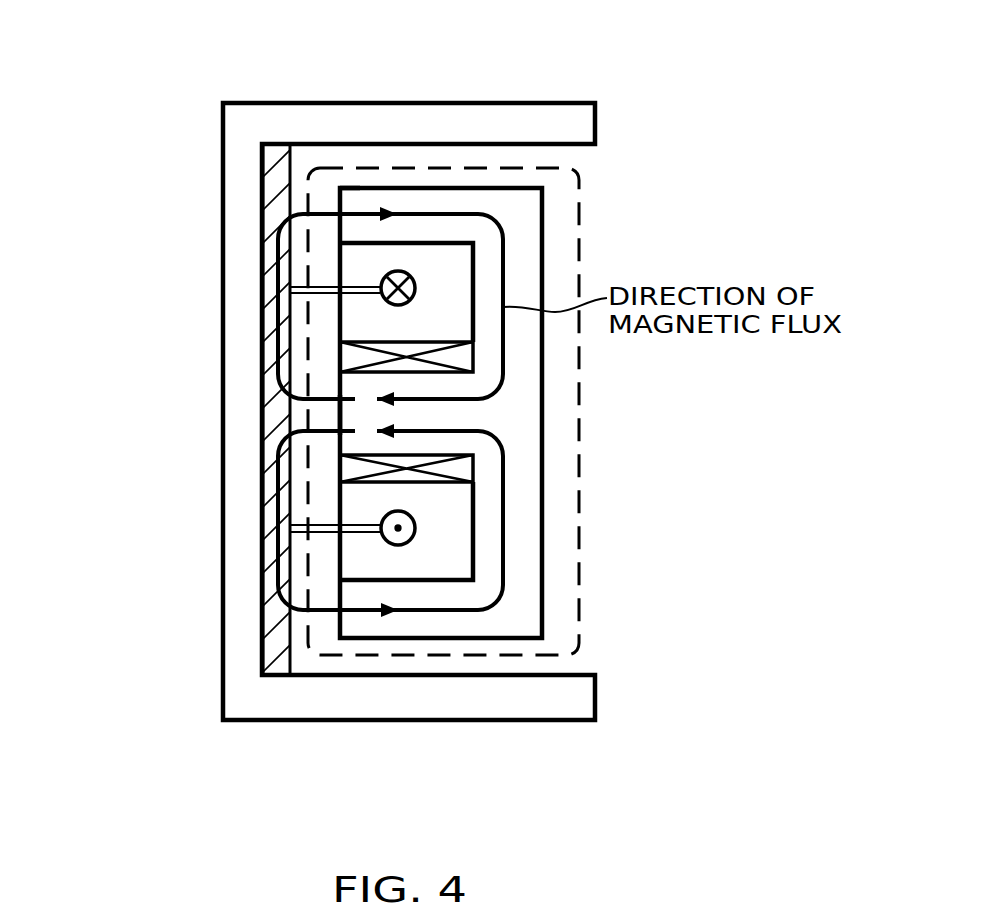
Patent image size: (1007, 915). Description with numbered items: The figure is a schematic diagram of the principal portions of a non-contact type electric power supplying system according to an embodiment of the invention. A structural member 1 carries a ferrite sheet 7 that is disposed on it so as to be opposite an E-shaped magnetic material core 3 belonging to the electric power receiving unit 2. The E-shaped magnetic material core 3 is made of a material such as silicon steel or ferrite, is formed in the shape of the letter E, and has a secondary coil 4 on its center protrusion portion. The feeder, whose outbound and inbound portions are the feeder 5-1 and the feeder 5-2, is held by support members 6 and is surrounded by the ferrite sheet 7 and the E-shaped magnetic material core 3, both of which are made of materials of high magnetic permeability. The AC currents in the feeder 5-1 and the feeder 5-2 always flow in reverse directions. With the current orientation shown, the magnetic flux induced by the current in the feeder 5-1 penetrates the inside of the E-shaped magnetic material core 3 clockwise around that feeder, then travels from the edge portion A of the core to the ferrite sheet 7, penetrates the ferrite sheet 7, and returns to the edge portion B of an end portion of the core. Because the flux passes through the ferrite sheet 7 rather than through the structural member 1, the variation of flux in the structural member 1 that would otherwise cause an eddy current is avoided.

The structural member 1 is at (257, 103).
The electric power receiving unit 2 is at (580, 515).
The E-shaped magnetic material core 3 is at (543, 210).
The secondary coil 4 is at (350, 479).
The feeder 5-1 is at (417, 291).
The feeder 5-2 is at (437, 520).
The support member 6 is at (342, 298).
The ferrite sheet 7 is at (273, 638).
The edge portion A is at (340, 411).
The edge portion B is at (342, 186).